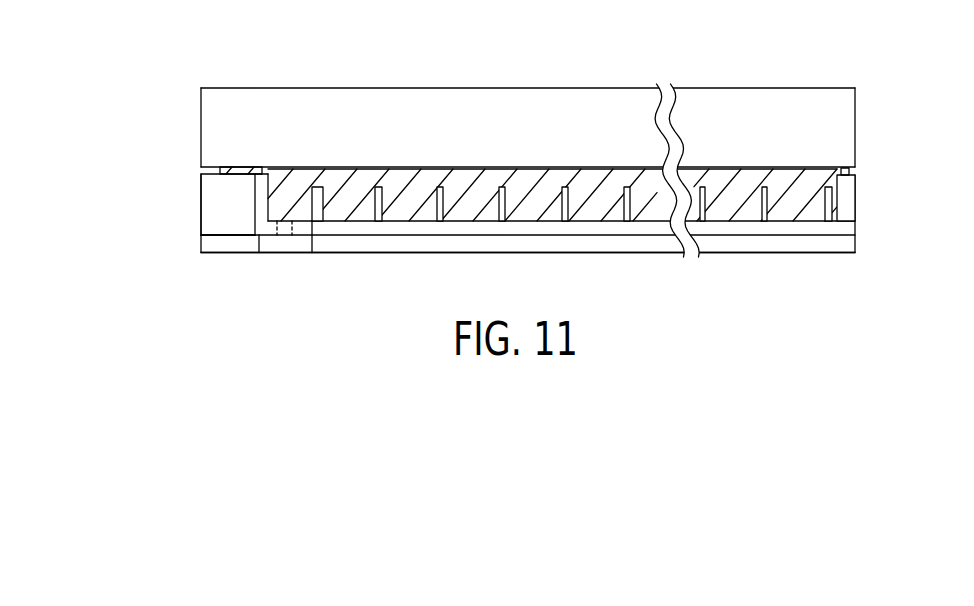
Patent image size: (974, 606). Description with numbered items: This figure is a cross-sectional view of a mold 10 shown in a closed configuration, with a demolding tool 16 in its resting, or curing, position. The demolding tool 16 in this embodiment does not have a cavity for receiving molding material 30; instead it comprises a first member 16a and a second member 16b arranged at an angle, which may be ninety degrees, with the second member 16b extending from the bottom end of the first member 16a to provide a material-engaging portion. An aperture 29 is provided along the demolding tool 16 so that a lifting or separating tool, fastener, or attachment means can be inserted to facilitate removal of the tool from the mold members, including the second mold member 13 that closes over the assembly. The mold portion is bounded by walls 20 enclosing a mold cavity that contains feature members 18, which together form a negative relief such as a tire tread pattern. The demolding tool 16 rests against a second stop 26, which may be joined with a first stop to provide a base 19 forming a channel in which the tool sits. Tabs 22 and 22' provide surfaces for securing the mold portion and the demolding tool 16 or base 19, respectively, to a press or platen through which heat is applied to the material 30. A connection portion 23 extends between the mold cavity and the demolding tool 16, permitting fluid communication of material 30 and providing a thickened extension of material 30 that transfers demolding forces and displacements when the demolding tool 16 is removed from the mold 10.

The mold 10 is at (163, 103).
The second mold member 13 is at (315, 105).
The demolding tool 16 is at (259, 253).
The first member 16a is at (258, 207).
The second member 16b is at (303, 230).
The feature members 18 is at (395, 185).
The base 19 is at (223, 253).
The walls 20 is at (320, 187).
The tabs 22 is at (583, 270).
The tabs 22' is at (187, 242).
The connection portion 23 is at (315, 176).
The second stop 26 is at (212, 185).
The aperture 29 is at (285, 229).
The material 30 is at (233, 169).